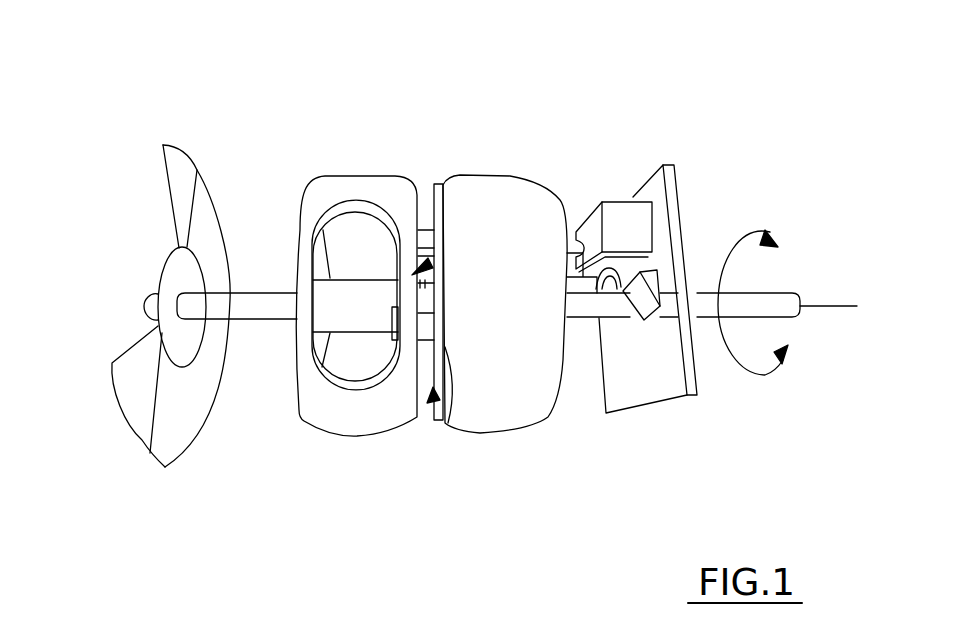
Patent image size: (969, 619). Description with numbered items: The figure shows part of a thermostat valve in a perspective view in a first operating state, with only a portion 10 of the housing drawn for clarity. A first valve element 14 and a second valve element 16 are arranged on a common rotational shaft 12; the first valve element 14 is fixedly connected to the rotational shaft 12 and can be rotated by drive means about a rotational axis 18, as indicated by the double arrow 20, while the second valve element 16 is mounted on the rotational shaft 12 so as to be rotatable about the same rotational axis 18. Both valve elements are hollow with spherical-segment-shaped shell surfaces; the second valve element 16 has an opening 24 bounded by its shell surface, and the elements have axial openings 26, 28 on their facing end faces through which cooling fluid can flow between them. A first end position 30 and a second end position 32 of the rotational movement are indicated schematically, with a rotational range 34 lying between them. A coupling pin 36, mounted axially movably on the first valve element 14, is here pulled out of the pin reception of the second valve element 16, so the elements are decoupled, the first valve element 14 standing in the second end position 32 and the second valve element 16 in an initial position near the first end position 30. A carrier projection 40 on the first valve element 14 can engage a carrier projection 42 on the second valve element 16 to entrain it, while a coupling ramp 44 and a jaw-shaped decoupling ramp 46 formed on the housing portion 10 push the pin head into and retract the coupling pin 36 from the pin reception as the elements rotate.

The housing portion 10 is at (652, 396).
The rotational shaft 12 is at (780, 300).
The first valve element 14 is at (514, 407).
The second valve element 16 is at (345, 420).
The rotational axis 18 is at (840, 312).
The double arrow 20 is at (757, 380).
The opening 24 is at (333, 217).
The axial opening 26 is at (433, 403).
The axial opening 28 is at (428, 227).
The first end position 30 is at (133, 392).
The second end position 32 is at (176, 167).
The rotational range 34 is at (198, 423).
The coupling pin 36 is at (566, 253).
The carrier projection 40 is at (427, 232).
The carrier projection 42 is at (448, 410).
The coupling ramp 44 is at (680, 244).
The decoupling ramp 46 is at (597, 200).